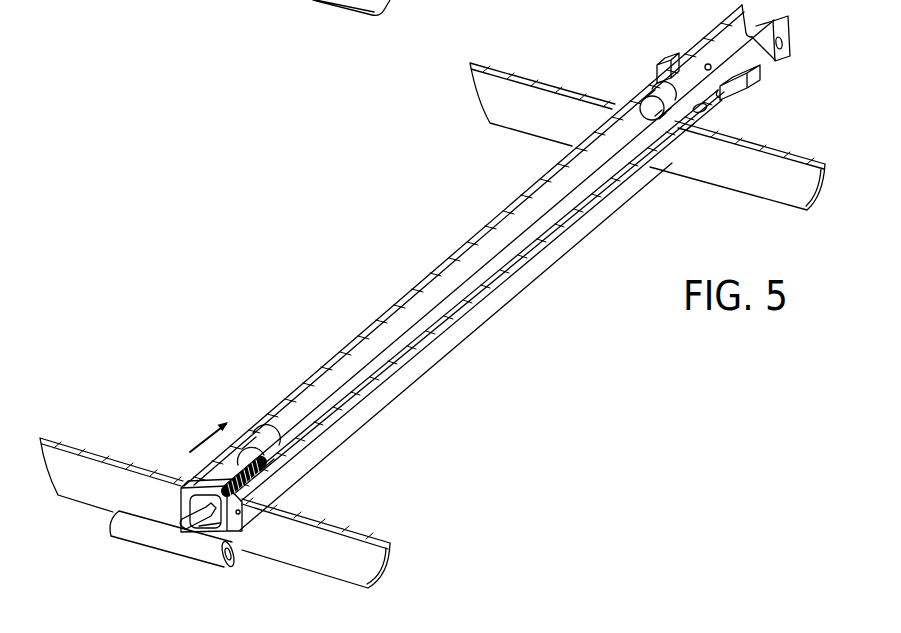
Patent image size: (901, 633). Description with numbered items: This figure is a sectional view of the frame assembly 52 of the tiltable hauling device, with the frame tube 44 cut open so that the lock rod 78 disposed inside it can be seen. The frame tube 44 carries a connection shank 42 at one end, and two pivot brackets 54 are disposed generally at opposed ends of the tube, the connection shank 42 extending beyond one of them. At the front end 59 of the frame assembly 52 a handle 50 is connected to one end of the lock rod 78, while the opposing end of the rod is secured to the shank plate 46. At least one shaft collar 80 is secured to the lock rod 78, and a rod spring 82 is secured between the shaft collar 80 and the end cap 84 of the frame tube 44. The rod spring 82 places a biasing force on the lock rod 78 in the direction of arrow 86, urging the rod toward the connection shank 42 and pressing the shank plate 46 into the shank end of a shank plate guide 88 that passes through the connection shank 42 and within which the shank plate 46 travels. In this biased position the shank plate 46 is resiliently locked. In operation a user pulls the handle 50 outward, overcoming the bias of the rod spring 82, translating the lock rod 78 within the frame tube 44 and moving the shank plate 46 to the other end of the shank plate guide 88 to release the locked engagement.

The connection shank 42 is at (767, 62).
The frame tube 44 is at (433, 350).
The shank plate 46 is at (745, 82).
The handle 50 is at (167, 540).
The frame assembly 52 is at (208, 228).
The pivot bracket 54 is at (67, 472).
The front end 59 is at (105, 352).
The lock rod 78 is at (193, 517).
The shaft collar 80 is at (267, 442).
The rod spring 82 is at (268, 475).
The end cap 84 is at (220, 523).
The arrow 86 is at (200, 438).
The shank plate guide 88 is at (660, 80).